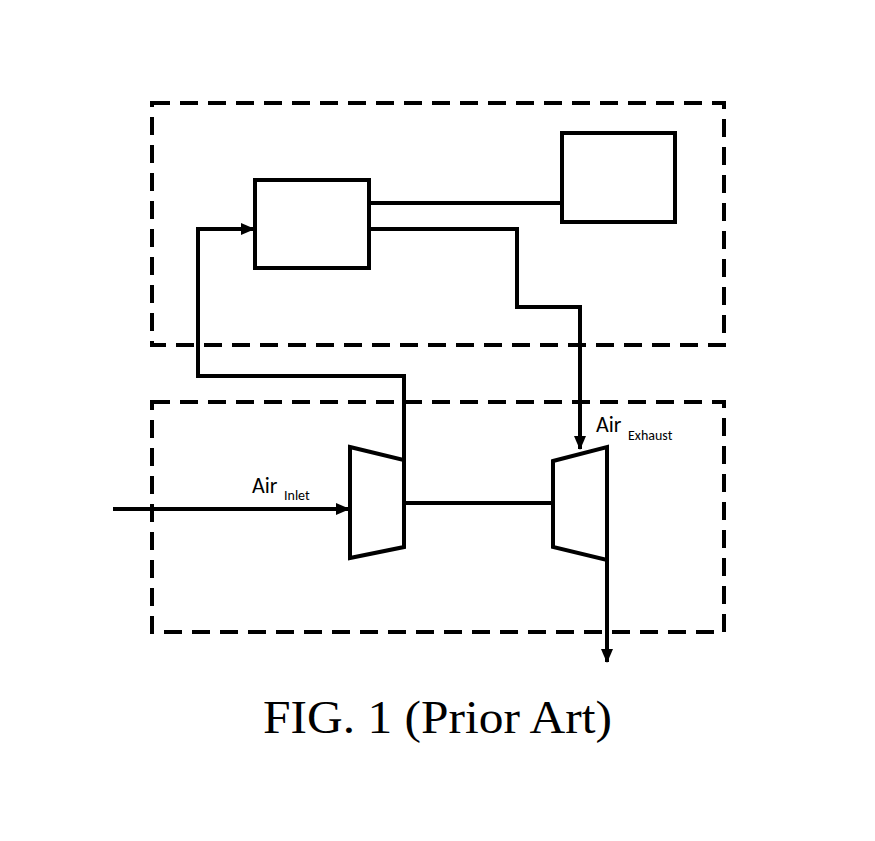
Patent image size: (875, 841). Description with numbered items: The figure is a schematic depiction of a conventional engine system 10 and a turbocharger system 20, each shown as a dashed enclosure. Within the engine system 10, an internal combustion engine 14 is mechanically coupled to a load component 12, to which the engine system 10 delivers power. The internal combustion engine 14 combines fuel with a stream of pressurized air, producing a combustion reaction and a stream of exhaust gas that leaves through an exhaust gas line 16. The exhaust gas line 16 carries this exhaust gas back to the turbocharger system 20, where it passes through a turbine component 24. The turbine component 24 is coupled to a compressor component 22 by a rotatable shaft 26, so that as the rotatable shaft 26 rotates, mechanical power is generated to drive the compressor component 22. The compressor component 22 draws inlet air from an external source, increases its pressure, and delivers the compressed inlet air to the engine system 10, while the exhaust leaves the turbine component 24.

The engine system 10 is at (466, 100).
The load component 12 is at (643, 157).
The internal combustion engine 14 is at (293, 203).
The exhaust gas line 16 is at (540, 305).
The turbocharger system 20 is at (724, 503).
The compressor component 22 is at (383, 530).
The turbine component 24 is at (570, 520).
The rotatable shaft 26 is at (443, 497).